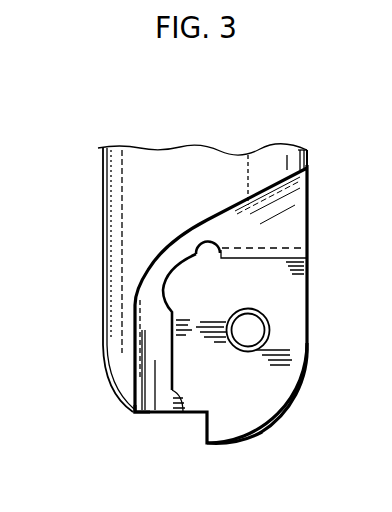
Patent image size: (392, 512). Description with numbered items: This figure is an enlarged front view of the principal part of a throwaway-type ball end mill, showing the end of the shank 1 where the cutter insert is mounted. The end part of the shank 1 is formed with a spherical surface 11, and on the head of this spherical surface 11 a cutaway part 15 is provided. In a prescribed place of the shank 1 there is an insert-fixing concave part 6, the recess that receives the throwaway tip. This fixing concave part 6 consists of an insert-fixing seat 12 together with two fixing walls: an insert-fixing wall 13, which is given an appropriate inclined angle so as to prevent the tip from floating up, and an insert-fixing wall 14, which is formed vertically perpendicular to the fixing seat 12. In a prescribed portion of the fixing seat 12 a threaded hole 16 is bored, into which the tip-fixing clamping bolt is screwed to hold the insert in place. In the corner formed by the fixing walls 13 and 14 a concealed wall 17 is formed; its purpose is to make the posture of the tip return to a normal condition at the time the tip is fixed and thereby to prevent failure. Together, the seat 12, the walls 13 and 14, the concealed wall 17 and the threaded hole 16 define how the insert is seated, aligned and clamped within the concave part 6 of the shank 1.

The shank 1 is at (100, 190).
The insert-fixing concave part 6 is at (190, 333).
The spherical surface 11 is at (285, 403).
The insert-fixing seat 12 is at (245, 395).
The insert-fixing wall 13 is at (274, 260).
The insert-fixing wall 14 is at (183, 416).
The cutaway part 15 is at (150, 418).
The threaded hole 16 is at (262, 330).
The concealed wall 17 is at (178, 266).